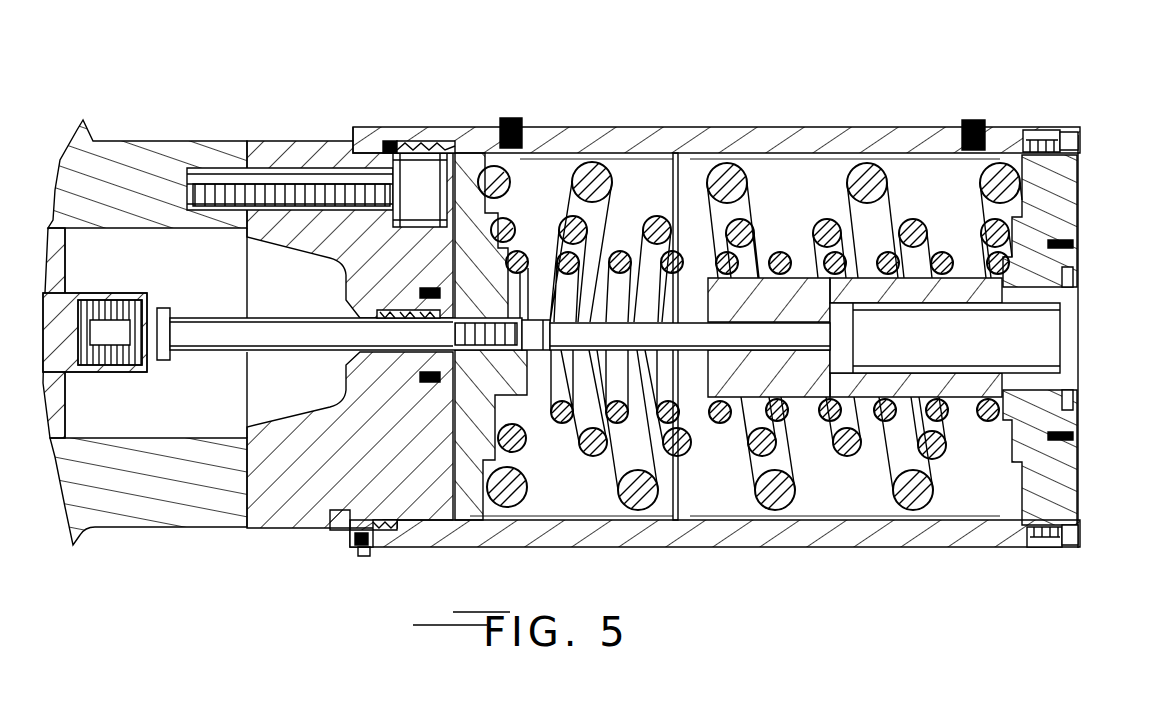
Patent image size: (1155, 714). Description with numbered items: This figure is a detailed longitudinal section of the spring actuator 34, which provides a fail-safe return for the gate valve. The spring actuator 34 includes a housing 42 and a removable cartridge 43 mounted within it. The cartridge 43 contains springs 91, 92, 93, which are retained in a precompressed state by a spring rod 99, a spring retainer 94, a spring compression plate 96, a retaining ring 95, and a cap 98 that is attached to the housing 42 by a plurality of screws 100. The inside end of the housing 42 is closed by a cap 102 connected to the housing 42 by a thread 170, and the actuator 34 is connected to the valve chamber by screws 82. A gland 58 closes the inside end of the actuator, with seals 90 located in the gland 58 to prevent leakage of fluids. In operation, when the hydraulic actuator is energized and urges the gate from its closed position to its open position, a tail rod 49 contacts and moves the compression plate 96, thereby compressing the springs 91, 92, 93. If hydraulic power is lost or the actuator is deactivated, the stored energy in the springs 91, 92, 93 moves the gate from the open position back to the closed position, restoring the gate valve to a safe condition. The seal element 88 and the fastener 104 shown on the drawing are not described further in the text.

The spring actuator 34 is at (703, 110).
The housing 42 is at (845, 127).
The removable cartridge 43 is at (913, 290).
The tail rod 49 is at (202, 312).
The gland 58 is at (347, 297).
The screws 82 is at (297, 168).
The seal 88 is at (333, 528).
The seals 90 is at (387, 150).
The spring 91 is at (895, 493).
The spring 92 is at (932, 463).
The spring 93 is at (950, 405).
The spring retainer 94 is at (803, 250).
The retaining ring 95 is at (1067, 282).
The spring compression plate 96 is at (477, 170).
The cap 98 is at (1063, 480).
The spring rod 99 is at (697, 360).
The screws 100 is at (1080, 133).
The cap 102 is at (267, 522).
The screw 104 is at (362, 556).
The thread 170 is at (440, 138).